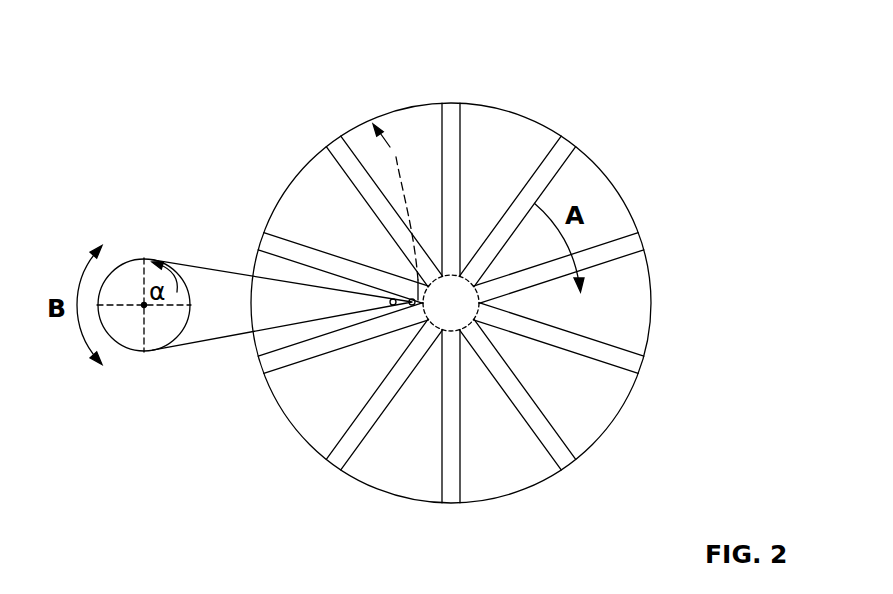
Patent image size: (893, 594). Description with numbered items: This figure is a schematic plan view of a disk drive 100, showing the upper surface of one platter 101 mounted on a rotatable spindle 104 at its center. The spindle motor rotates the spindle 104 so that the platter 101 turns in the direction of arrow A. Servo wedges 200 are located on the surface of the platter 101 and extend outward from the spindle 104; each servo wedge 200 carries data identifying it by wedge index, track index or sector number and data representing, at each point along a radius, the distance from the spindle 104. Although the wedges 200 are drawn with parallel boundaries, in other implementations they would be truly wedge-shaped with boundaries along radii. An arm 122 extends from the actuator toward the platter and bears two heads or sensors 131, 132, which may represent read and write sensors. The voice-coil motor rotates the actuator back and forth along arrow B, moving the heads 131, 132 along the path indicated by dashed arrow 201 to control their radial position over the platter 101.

The disk drive 100 is at (122, 68).
The platter 101 is at (385, 116).
The spindle 104 is at (460, 272).
The arm 122 is at (177, 262).
The sensor 131 is at (412, 305).
The sensor 132 is at (393, 305).
The servo wedge 200 is at (460, 113).
The dashed arrow 201 is at (397, 165).